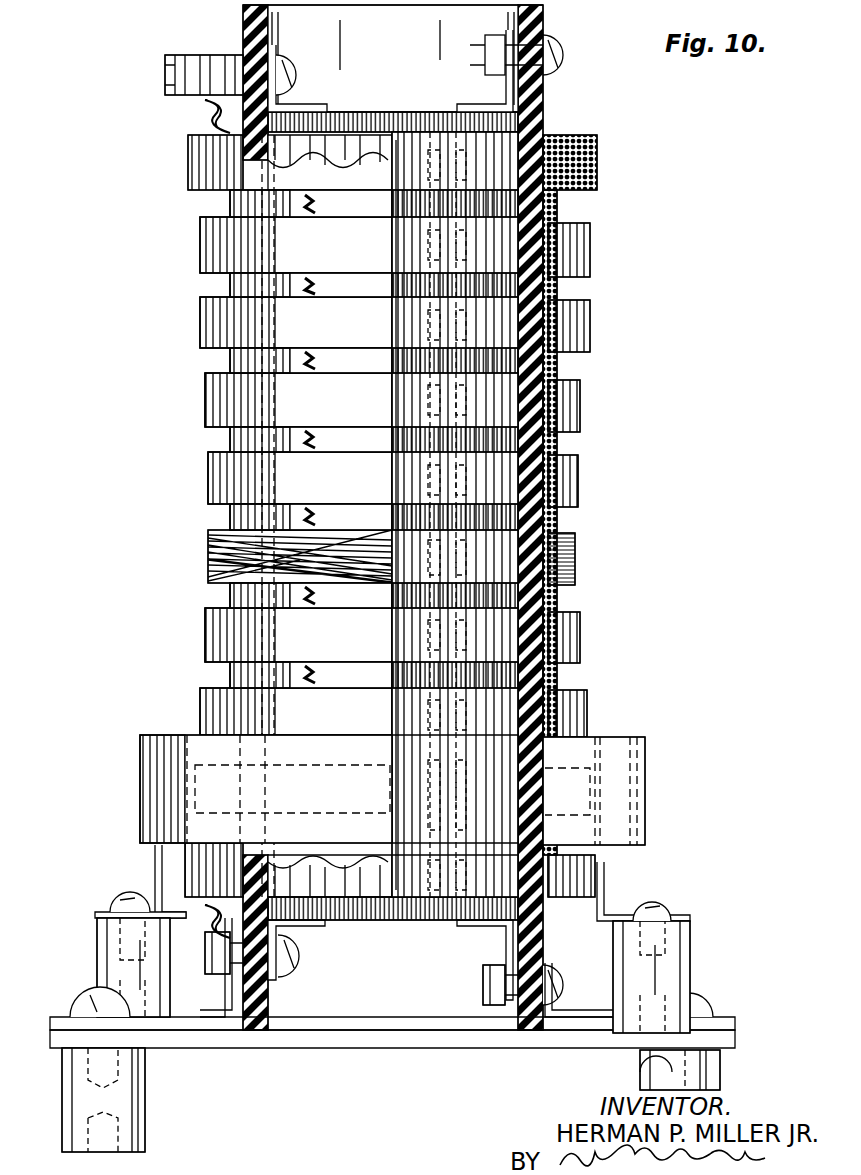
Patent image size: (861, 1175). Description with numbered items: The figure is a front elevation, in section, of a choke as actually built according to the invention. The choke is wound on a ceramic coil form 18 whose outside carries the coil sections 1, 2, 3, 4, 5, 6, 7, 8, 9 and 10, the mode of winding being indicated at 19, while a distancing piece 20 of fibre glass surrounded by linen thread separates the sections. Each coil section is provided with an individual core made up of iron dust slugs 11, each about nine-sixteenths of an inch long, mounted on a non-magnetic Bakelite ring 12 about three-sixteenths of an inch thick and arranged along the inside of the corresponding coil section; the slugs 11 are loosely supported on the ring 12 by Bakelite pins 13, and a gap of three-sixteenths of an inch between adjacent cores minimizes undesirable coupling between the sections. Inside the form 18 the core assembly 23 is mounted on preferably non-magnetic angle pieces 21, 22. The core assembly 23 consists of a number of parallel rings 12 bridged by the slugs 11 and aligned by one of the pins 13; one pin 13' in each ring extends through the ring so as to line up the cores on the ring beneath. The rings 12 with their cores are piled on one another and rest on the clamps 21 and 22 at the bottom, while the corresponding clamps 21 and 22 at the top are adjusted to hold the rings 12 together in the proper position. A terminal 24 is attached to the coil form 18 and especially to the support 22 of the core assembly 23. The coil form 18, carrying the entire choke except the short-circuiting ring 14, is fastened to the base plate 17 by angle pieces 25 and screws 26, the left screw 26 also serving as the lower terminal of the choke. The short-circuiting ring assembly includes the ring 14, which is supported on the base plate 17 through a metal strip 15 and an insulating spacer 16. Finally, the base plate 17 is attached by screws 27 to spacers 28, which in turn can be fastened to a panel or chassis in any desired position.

The coil section 1 is at (597, 165).
The coil section 2 is at (590, 255).
The coil section 3 is at (590, 335).
The coil section 4 is at (580, 410).
The coil section 5 is at (578, 485).
The coil section 6 is at (575, 560).
The coil section 7 is at (580, 642).
The coil section 8 is at (587, 712).
The coil section 9 is at (590, 780).
The coil section 10 is at (600, 890).
The iron dust slug 11 is at (440, 130).
The non-magnetic ring 12 is at (362, 108).
The Bakelite pin 13 is at (391, 520).
The Bakelite pin 13' is at (434, 520).
The short-circuiting ring 14 is at (140, 772).
The metal strip 15 is at (155, 872).
The insulating spacer 16 is at (690, 948).
The base plate 17 is at (385, 1050).
The ceramic coil form 18 is at (243, 18).
The mode of winding 19 is at (208, 548).
The distancing piece 20 is at (230, 298).
The angle piece 21 is at (328, 106).
The angle piece 22 is at (478, 100).
The core assembly 23 is at (557, 365).
The terminal 24 is at (165, 72).
The angle piece 25 is at (50, 1022).
The screw 26 is at (288, 978).
The screw 27 is at (78, 992).
The spacer 28 is at (62, 1103).